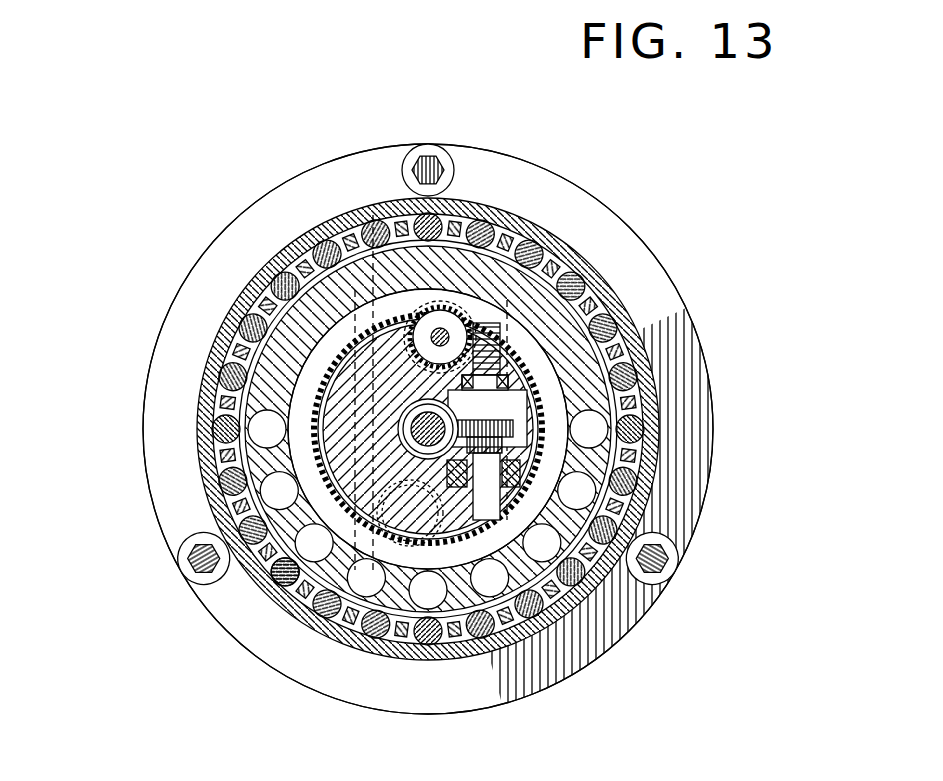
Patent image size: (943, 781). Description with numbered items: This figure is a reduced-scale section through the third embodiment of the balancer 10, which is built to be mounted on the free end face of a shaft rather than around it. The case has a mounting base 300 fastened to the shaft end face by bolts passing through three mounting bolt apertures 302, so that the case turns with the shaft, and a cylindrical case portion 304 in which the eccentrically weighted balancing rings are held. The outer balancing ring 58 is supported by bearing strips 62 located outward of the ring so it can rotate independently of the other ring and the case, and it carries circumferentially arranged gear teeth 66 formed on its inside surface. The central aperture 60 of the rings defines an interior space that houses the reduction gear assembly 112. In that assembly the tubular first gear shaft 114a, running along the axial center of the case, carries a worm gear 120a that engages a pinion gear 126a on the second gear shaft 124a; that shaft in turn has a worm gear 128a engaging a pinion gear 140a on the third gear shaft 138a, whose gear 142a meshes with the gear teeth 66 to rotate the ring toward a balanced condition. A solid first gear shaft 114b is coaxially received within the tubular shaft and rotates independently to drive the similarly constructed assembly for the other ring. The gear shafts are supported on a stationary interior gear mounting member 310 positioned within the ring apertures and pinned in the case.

The balancer 10 is at (147, 253).
The outer balancing ring 58 is at (578, 365).
The central aperture 60 is at (540, 344).
The bearing strips 62 is at (268, 590).
The gear teeth 66 is at (385, 325).
The reduction gear assembly 112 is at (378, 433).
The first gear shaft 114a is at (412, 412).
The first gear shaft 114b is at (288, 565).
The worm gear 120a is at (357, 462).
The second gear shaft 124a is at (500, 407).
The pinion gear 126a is at (523, 432).
The worm gear 128a is at (500, 327).
The third gear shaft 138a is at (455, 322).
The pinion gear 140a is at (440, 340).
The gear 142a is at (382, 220).
The base 300 is at (617, 233).
The mounting bolt apertures 302 is at (430, 160).
The cylindrical case portion 304 is at (560, 610).
The interior gear mounting member 310 is at (353, 345).